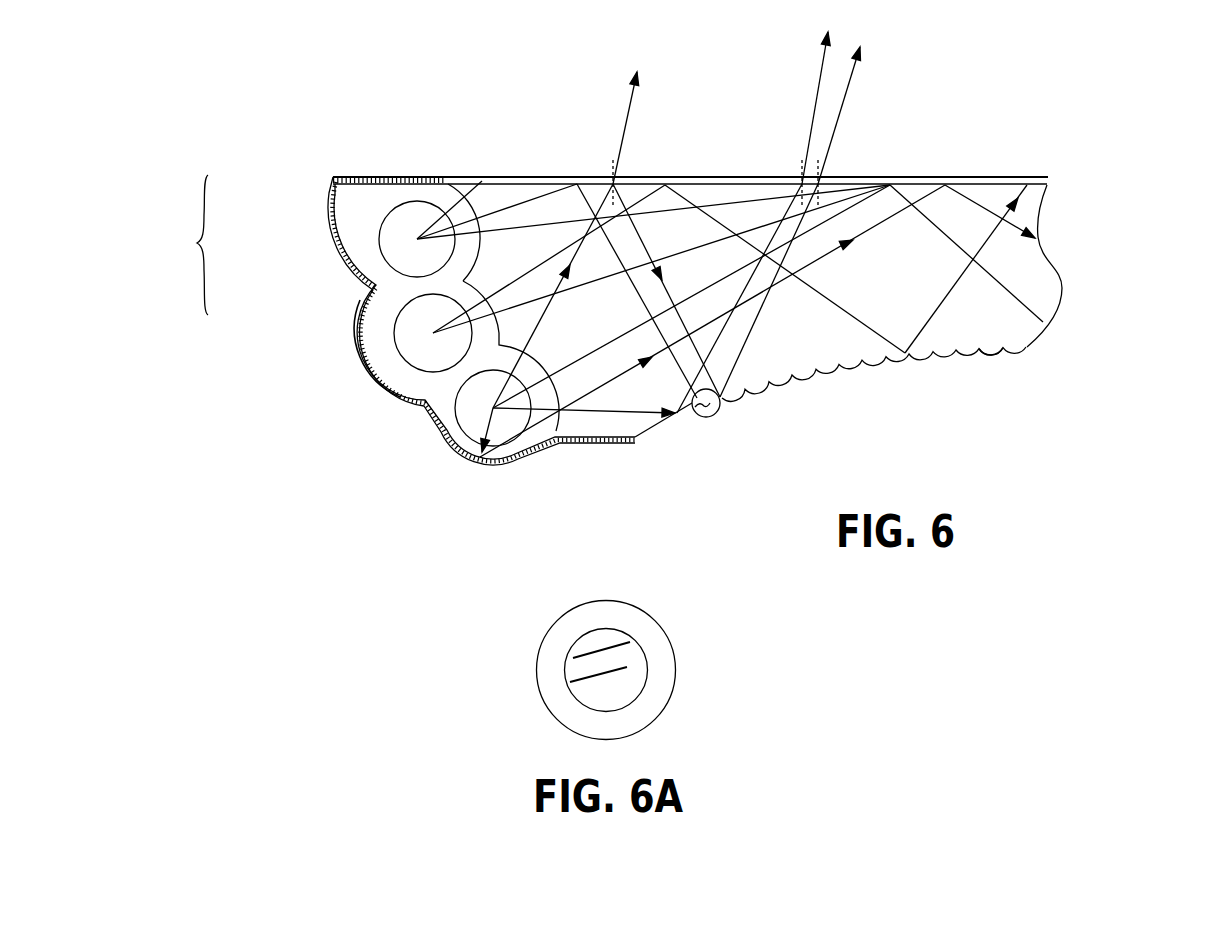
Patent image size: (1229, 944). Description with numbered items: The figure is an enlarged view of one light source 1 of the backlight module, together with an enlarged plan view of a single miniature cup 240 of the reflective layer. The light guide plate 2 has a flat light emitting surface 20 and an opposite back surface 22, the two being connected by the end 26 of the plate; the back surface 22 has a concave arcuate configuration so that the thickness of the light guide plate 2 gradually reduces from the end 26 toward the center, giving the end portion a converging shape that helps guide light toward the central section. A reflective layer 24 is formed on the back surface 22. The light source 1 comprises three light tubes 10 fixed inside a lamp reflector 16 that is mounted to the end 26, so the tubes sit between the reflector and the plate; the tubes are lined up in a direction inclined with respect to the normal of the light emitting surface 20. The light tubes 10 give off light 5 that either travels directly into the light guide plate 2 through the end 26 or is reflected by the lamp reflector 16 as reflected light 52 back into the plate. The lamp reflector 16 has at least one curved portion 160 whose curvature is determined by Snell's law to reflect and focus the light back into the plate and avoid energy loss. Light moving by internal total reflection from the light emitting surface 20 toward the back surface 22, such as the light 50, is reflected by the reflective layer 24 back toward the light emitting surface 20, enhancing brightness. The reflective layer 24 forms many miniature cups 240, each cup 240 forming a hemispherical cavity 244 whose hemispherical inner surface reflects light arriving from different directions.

In FIG. 6, the light source 1 is at (193, 245).
In FIG. 6, the light guide plate 2 is at (980, 177).
In FIG. 6, the light 5 is at (543, 318).
In FIG. 6, the light tubes 10 is at (409, 201).
In FIG. 6, the lamp reflector 16 is at (330, 213).
In FIG. 6, the light emitting surface 20 is at (1008, 184).
In FIG. 6, the back surface 22 is at (997, 358).
In FIG. 6, the reflective layer 24 is at (1027, 347).
In FIG. 6, the end 26 is at (476, 243).
In FIG. 6, the light 50 is at (666, 290).
In FIG. 6, the reflected light 52 is at (757, 321).
In FIG. 6, the curved portion 160 is at (382, 392).
In FIG. 6, the miniature cup 240 is at (719, 406).
In FIG. 6A, the miniature cup 240 is at (672, 640).
In FIG. 6A, the hemispherical cavity 244 is at (630, 693).